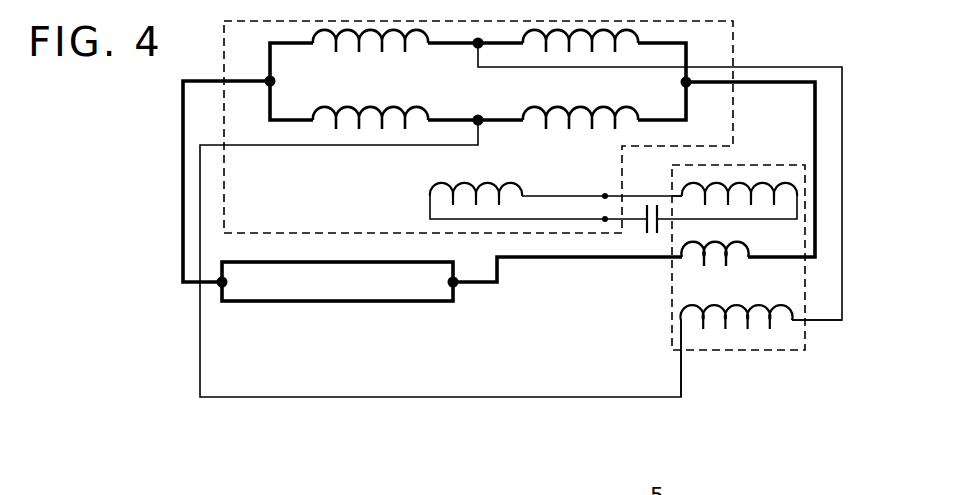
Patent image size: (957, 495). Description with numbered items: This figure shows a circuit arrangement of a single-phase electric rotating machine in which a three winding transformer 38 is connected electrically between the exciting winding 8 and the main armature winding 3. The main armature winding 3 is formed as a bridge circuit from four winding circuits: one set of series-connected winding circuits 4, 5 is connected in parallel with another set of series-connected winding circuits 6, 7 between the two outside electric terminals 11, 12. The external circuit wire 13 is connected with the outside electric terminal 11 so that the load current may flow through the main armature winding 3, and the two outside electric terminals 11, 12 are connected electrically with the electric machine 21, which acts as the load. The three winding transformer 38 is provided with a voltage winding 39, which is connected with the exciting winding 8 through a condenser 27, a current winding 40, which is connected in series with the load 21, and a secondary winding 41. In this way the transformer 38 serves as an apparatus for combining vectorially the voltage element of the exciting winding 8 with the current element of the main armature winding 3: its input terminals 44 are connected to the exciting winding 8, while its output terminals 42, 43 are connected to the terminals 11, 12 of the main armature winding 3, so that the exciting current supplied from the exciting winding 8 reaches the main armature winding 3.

The main armature winding 3 is at (462, 100).
The winding circuit 4 is at (381, 46).
The winding circuit 5 is at (641, 37).
The winding circuit 6 is at (366, 115).
The winding circuit 7 is at (603, 111).
The exciting winding 8 is at (488, 181).
The outside electric terminal 11 is at (268, 80).
The outside electric terminal 12 is at (689, 87).
The external circuit wire 13 is at (208, 82).
The electric machine 21 is at (418, 303).
The condenser 27 is at (645, 225).
The three winding transformer 38 is at (771, 163).
The voltage winding 39 is at (684, 187).
The current winding 40 is at (700, 256).
The secondary winding 41 is at (727, 321).
The output terminal 42 is at (804, 321).
The output terminal 43 is at (683, 352).
The input terminals 44 is at (675, 216).